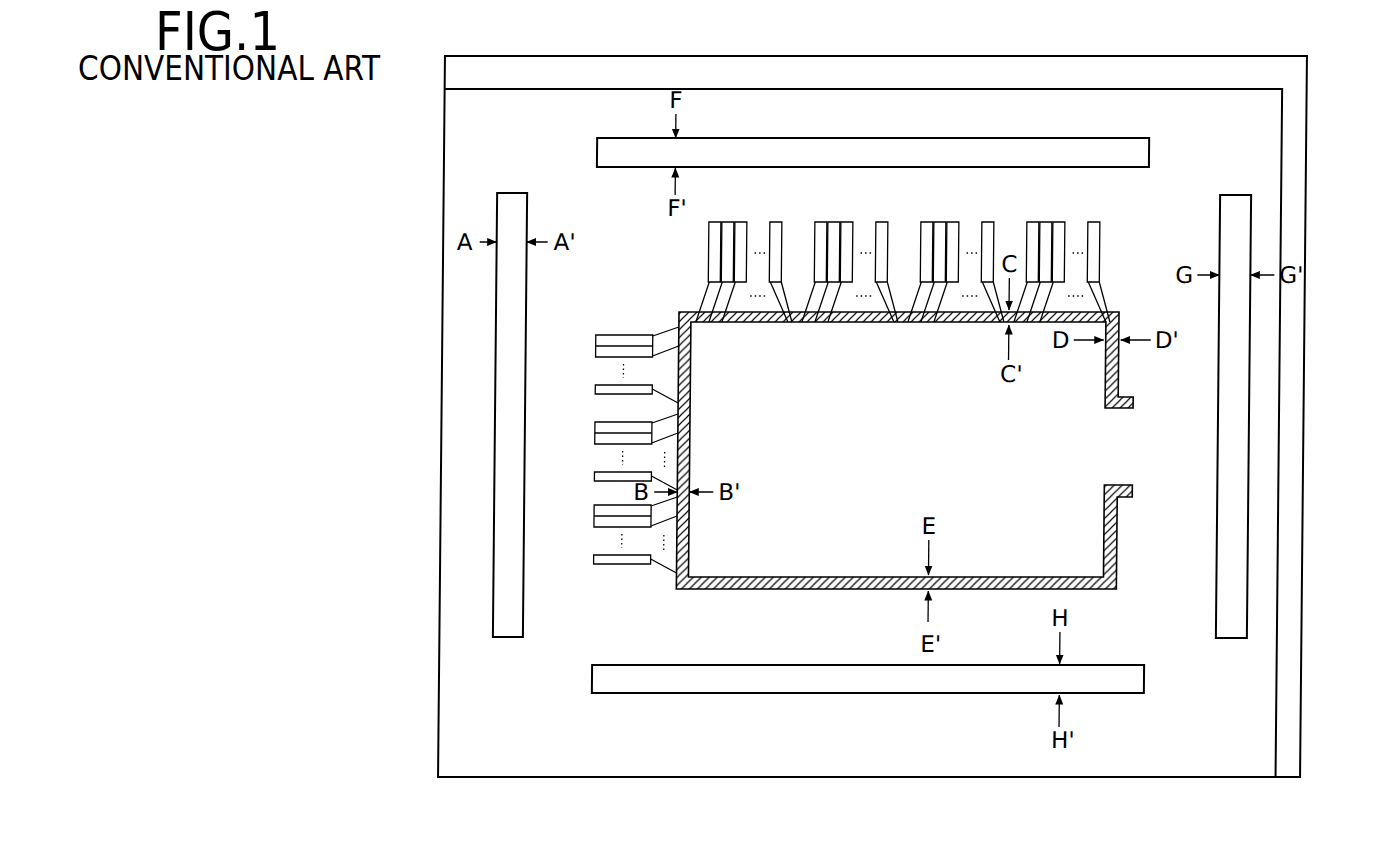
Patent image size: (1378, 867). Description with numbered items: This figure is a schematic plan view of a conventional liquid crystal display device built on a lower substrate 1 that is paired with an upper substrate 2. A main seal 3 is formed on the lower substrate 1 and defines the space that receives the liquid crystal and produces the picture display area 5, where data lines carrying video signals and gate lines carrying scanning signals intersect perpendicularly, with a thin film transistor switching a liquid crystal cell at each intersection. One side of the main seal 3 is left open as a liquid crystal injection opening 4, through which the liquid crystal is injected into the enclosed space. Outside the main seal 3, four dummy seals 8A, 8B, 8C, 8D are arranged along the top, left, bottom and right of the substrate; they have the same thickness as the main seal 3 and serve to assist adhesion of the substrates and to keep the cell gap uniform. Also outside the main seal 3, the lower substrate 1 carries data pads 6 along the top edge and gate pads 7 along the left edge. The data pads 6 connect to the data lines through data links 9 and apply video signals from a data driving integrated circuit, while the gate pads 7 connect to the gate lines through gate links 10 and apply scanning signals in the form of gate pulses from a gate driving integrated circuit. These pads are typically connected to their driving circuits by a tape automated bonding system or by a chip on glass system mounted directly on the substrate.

The lower substrate 1 is at (1303, 83).
The upper substrate 2 is at (1279, 131).
The main seal 3 is at (1120, 371).
The liquid crystal injection opening 4 is at (1120, 447).
The picture display area 5 is at (843, 561).
The data pads 6 is at (777, 212).
The gate pads 7 is at (590, 330).
The dummy seal 8A is at (928, 143).
The dummy seal 8B is at (509, 309).
The dummy seal 8C is at (878, 679).
The dummy seal 8D is at (1238, 352).
The data links 9 is at (664, 268).
The gate links 10 is at (687, 598).